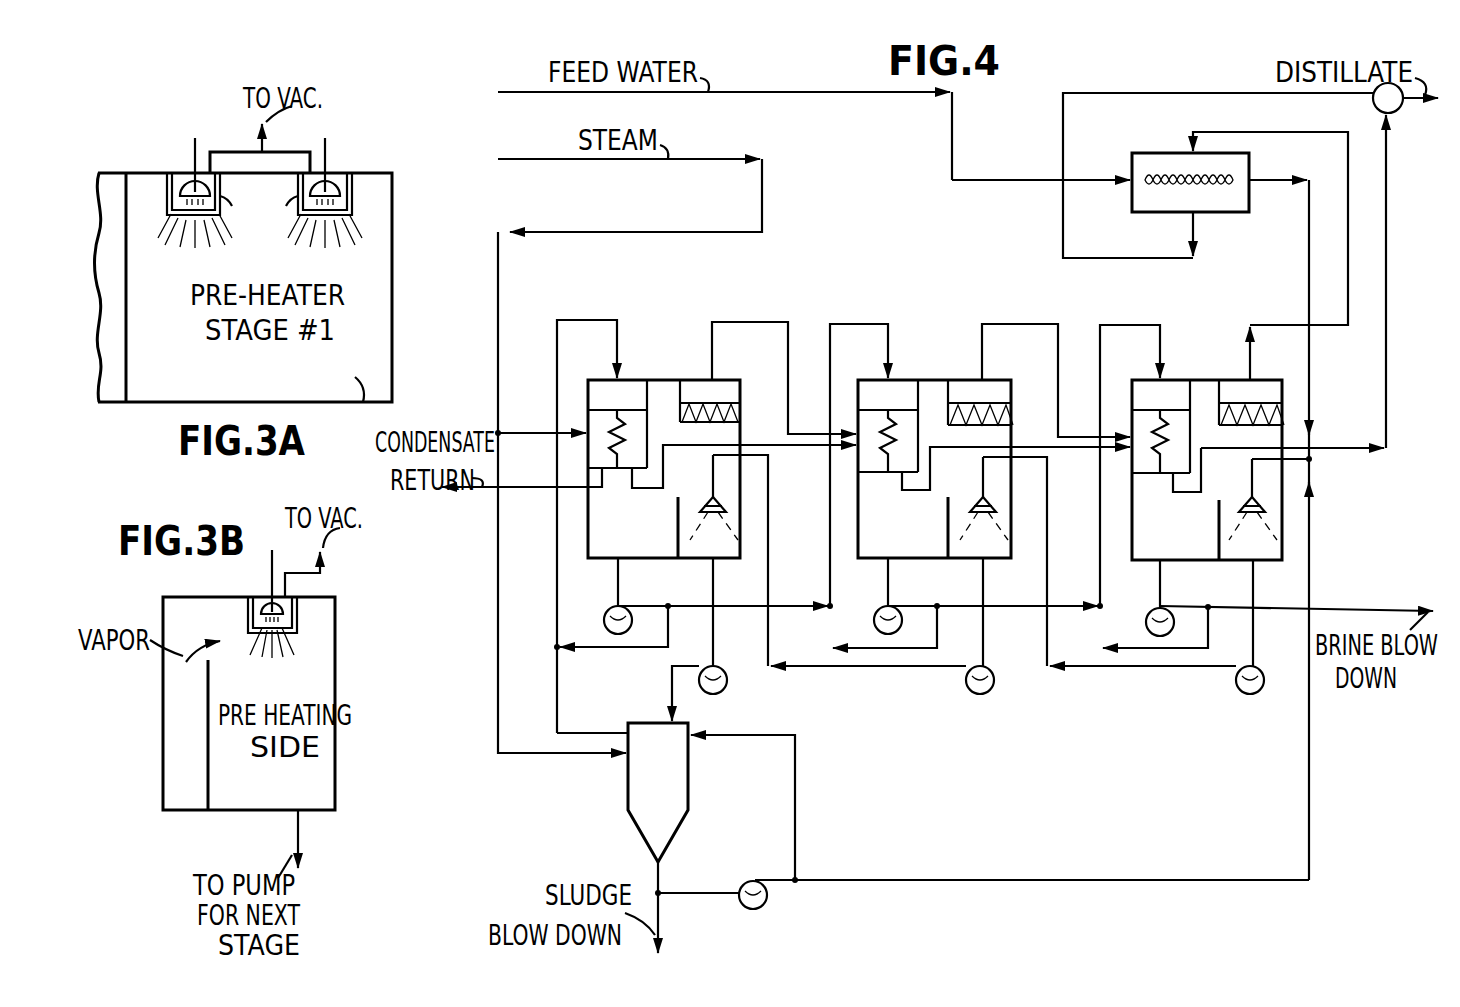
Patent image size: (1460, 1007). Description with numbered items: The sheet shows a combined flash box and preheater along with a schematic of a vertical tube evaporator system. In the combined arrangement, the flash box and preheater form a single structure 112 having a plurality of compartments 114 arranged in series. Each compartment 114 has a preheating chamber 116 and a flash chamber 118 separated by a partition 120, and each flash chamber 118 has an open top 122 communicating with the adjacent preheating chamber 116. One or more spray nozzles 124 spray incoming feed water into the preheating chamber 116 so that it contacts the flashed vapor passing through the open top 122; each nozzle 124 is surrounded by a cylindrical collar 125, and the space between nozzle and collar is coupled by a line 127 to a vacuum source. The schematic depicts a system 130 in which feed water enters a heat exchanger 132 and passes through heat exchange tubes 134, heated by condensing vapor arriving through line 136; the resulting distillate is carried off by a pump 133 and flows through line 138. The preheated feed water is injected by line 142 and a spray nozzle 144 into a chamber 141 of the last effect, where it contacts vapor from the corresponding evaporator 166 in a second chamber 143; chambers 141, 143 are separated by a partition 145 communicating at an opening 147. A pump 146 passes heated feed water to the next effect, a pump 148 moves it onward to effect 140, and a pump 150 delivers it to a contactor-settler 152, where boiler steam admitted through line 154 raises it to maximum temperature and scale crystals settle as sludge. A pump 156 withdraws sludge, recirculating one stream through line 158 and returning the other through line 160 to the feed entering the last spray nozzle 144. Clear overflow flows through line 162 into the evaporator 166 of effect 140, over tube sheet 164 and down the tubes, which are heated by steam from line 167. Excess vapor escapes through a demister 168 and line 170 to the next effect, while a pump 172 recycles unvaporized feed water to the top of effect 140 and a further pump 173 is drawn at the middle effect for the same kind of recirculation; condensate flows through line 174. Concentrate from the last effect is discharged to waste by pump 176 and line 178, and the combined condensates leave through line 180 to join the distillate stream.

In FIG. 3A, the single structure 112 is at (396, 236).
In FIG. 3A, the compartment 114 is at (368, 196).
In FIG. 3B, the compartment 114 is at (317, 678).
In FIG. 3B, the preheating chamber 116 is at (315, 765).
In FIG. 3B, the flash chamber 118 is at (172, 801).
In FIG. 3B, the partition 120 is at (212, 742).
In FIG. 3B, the open top 122 is at (180, 665).
In FIG. 3A, the spray nozzle 124 is at (190, 188).
In FIG. 3B, the spray nozzle 124 is at (267, 608).
In FIG. 3A, the cylindrical collar 125 is at (288, 206).
In FIG. 3B, the cylindrical collar 125 is at (297, 625).
In FIG. 3A, the line 127 is at (300, 150).
In FIG. 3B, the line 127 is at (325, 565).
In FIG. 4, the system 130 is at (1328, 470).
In FIG. 4, the heat exchanger 132 is at (1160, 152).
In FIG. 4, the pump 133 is at (1400, 110).
In FIG. 4, the heat exchange tubes 134 is at (1218, 185).
In FIG. 4, the line 136 is at (1348, 262).
In FIG. 4, the line 138 is at (1063, 232).
In FIG. 4, the effect 140 is at (662, 378).
In FIG. 4, the chamber 141 is at (728, 545).
In FIG. 4, the line 142 is at (1311, 425).
In FIG. 4, the second chamber 143 is at (600, 535).
In FIG. 4, the spray nozzle 144 is at (722, 500).
In FIG. 4, the partition 145 is at (953, 545).
In FIG. 4, the pump 146 is at (1248, 694).
In FIG. 4, the opening 147 is at (688, 490).
In FIG. 4, the pump 148 is at (990, 693).
In FIG. 4, the pump 150 is at (726, 688).
In FIG. 4, the contactor-settler 152 is at (680, 782).
In FIG. 4, the line 154 is at (498, 585).
In FIG. 4, the pump 156 is at (767, 900).
In FIG. 4, the line 158 is at (796, 793).
In FIG. 4, the line 160 is at (992, 880).
In FIG. 4, the line 162 is at (557, 620).
In FIG. 4, the tube sheet 164 is at (600, 410).
In FIG. 4, the evaporator 166 is at (600, 458).
In FIG. 4, the line 167 is at (500, 430).
In FIG. 4, the demister 168 is at (725, 410).
In FIG. 4, the line 170 is at (755, 322).
In FIG. 4, the pump 172 is at (604, 624).
In FIG. 4, the recirculation pump 173 is at (890, 634).
In FIG. 4, the line 174 is at (808, 445).
In FIG. 4, the pump 176 is at (1160, 637).
In FIG. 4, the line 178 is at (1355, 612).
In FIG. 4, the line 180 is at (1386, 366).